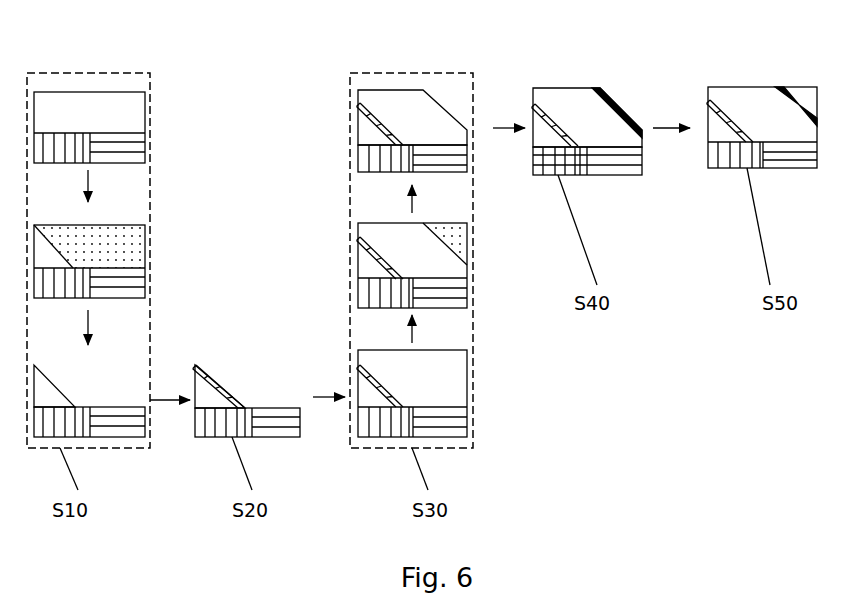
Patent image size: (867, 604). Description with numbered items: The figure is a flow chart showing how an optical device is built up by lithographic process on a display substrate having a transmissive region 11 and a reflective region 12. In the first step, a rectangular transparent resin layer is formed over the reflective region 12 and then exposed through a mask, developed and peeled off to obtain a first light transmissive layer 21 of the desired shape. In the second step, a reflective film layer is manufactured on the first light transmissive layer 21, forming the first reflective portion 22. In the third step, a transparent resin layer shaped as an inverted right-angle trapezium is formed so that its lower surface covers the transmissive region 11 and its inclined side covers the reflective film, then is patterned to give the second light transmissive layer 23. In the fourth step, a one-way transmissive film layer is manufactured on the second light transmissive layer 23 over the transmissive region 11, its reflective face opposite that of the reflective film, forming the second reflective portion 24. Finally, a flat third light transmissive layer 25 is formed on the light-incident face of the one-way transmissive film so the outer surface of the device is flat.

The transmissive region 11 is at (82, 152).
The reflective region 12 is at (127, 153).
The first light transmissive layer 21 is at (57, 400).
The first reflective portion 22 is at (227, 390).
The second light transmissive layer 23 is at (402, 113).
The second reflective portion 24 is at (635, 118).
The third light transmissive layer 25 is at (802, 95).